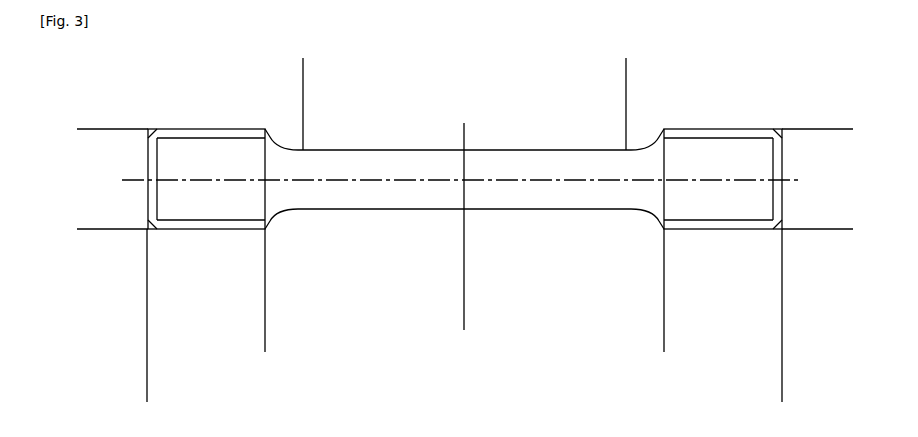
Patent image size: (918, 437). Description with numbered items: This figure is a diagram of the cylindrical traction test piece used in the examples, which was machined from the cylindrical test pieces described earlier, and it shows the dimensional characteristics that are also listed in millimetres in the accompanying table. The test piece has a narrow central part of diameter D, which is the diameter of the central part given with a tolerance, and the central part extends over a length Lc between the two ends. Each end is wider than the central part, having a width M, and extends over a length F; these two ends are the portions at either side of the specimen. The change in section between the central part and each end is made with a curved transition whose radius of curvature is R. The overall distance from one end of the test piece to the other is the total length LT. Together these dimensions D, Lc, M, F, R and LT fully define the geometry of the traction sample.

The length of the central part Lc is at (626, 62).
The width of the two ends M is at (81, 129).
The diameter of the central part D is at (462, 142).
The radius of curvature R is at (283, 219).
The length of the two ends F is at (147, 347).
The total length of the test piece LT is at (782, 397).